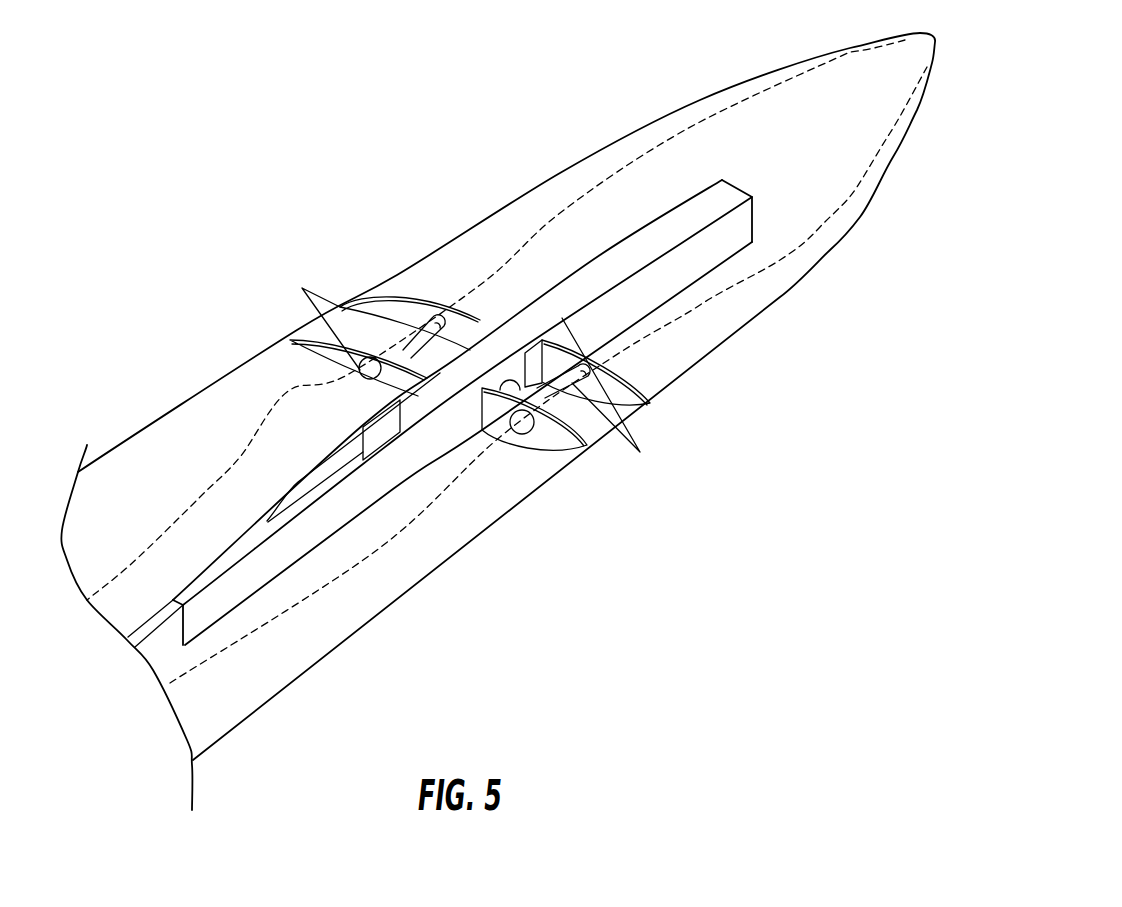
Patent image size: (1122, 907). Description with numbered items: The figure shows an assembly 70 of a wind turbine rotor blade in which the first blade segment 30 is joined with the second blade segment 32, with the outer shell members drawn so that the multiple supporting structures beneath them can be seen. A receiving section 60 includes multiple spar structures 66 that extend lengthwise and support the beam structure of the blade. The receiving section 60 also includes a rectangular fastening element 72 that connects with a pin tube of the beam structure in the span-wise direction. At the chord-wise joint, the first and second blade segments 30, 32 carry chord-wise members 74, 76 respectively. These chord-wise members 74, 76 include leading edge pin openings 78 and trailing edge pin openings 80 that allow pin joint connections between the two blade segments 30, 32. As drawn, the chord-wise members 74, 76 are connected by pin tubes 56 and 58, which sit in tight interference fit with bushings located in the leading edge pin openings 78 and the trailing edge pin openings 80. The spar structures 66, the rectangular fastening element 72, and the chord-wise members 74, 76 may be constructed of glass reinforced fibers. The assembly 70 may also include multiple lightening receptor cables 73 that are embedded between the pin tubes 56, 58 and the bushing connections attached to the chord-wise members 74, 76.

The first blade segment 30 is at (698, 104).
The second blade segment 32 is at (667, 238).
The pin tube 56 is at (582, 372).
The pin tube 58 is at (430, 325).
The receiving section 60 is at (465, 517).
The spar structures 66 is at (298, 482).
The assembly 70 is at (204, 236).
The rectangular fastening element 72 is at (372, 440).
The lightening receptor cables 73 is at (685, 130).
The chord-wise member 74 is at (635, 377).
The chord-wise member 76 is at (550, 460).
The leading edge pin openings 78 is at (614, 395).
The trailing edge pin openings 80 is at (348, 328).